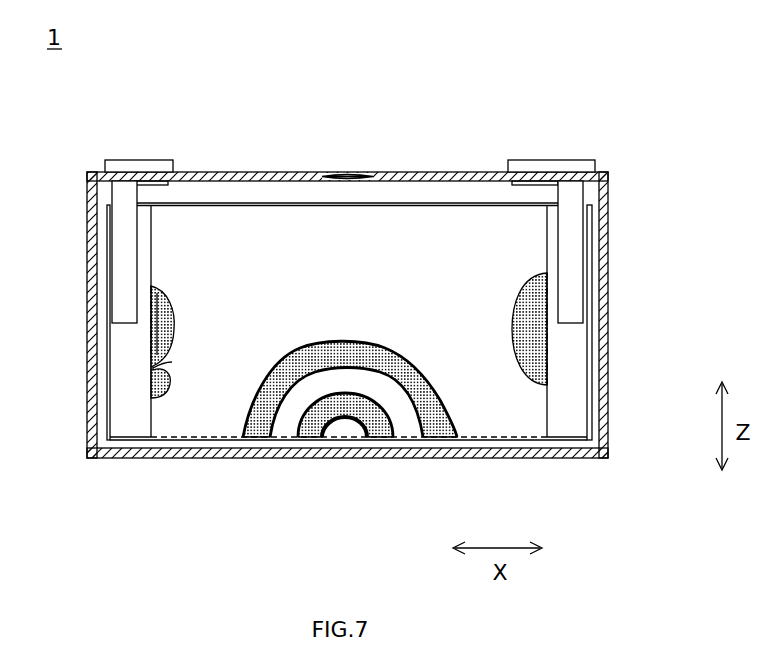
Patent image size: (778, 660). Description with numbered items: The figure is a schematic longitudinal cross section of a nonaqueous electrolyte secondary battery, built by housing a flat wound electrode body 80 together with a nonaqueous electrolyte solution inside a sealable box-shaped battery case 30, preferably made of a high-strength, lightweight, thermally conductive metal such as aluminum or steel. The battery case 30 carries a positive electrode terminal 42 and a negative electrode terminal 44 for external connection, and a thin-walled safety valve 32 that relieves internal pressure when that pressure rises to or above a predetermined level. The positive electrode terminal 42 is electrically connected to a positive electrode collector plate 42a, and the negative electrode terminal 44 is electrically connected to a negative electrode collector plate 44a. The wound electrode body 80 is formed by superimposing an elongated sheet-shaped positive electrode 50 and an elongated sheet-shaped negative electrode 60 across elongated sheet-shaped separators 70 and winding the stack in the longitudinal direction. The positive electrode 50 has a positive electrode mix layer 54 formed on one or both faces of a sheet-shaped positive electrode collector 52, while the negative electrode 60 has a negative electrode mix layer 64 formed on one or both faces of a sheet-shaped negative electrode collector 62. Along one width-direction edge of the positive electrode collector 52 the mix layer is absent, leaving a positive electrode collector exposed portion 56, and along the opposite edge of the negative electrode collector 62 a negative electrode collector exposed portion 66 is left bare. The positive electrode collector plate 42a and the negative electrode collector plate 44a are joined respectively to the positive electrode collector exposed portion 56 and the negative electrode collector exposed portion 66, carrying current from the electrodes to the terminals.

The battery case 30 is at (90, 166).
The safety valve 32 is at (352, 172).
The positive electrode terminal 42 is at (163, 160).
The positive electrode collector plate 42a is at (123, 288).
The negative electrode terminal 44 is at (515, 160).
The negative electrode collector plate 44a is at (579, 287).
The positive electrode 50 is at (334, 445).
The positive electrode collector 52 is at (104, 382).
The positive electrode mix layer 54 is at (176, 320).
The positive electrode collector exposed portion 56 is at (125, 430).
The negative electrode 60 is at (317, 437).
The negative electrode collector 62 is at (591, 407).
The negative electrode mix layer 64 is at (517, 312).
The negative electrode collector exposed portion 66 is at (567, 430).
The separator 70 is at (291, 437).
The wound electrode body 80 is at (270, 201).